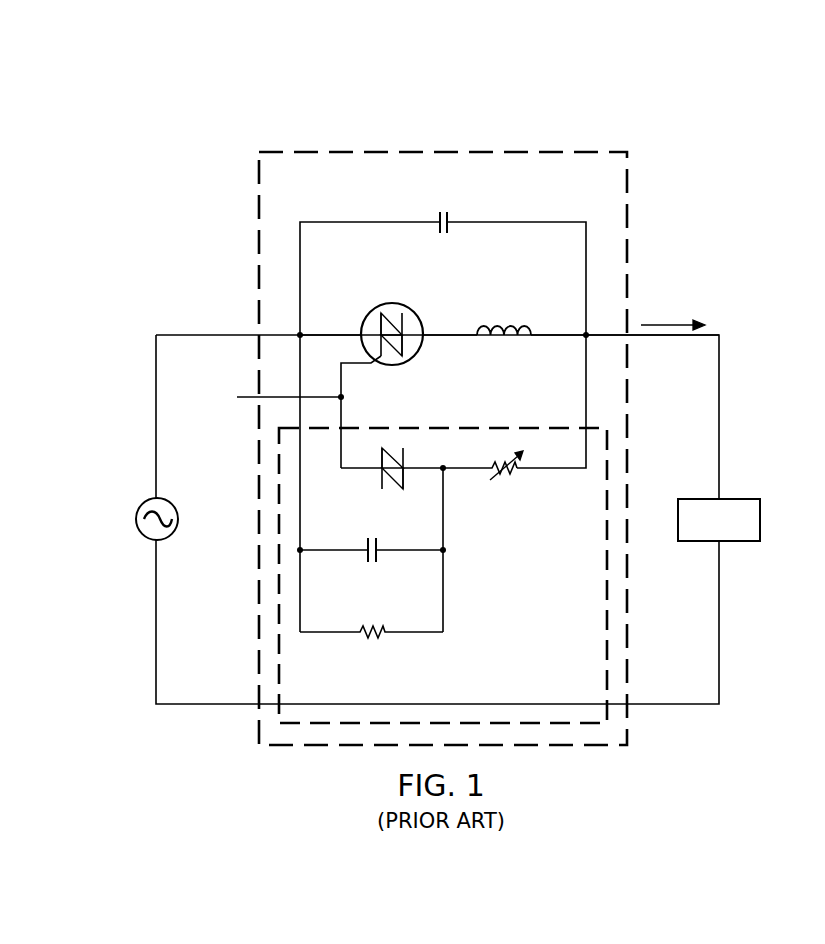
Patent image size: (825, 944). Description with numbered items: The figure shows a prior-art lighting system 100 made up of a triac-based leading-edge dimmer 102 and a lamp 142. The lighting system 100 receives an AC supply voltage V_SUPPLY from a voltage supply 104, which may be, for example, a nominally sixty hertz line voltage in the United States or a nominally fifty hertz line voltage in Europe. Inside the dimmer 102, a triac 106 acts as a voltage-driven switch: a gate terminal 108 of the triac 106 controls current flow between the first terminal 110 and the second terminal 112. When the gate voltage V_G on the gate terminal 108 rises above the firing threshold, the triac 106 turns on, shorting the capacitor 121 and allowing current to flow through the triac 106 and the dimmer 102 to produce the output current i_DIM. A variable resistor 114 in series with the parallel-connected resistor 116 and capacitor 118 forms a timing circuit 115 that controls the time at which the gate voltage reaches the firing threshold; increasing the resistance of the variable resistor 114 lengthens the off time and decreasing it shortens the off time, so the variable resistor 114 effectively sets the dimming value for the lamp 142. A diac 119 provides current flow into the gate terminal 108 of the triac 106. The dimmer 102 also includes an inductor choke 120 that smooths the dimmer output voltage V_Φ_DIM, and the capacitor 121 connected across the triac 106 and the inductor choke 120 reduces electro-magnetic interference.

The lighting system 100 is at (632, 114).
The triac-based leading-edge dimmer 102 is at (246, 248).
The voltage supply 104 is at (135, 518).
The triac 106 is at (391, 292).
The gate terminal 108 is at (377, 368).
The first terminal 110 is at (366, 328).
The second terminal 112 is at (424, 345).
The variable resistor 114 is at (507, 474).
The timing circuit 115 is at (505, 412).
The resistor 116 is at (367, 640).
The capacitor 118 is at (371, 564).
The diac 119 is at (380, 483).
The inductor choke 120 is at (507, 325).
The capacitor 121 is at (440, 212).
The lamp 142 is at (740, 544).